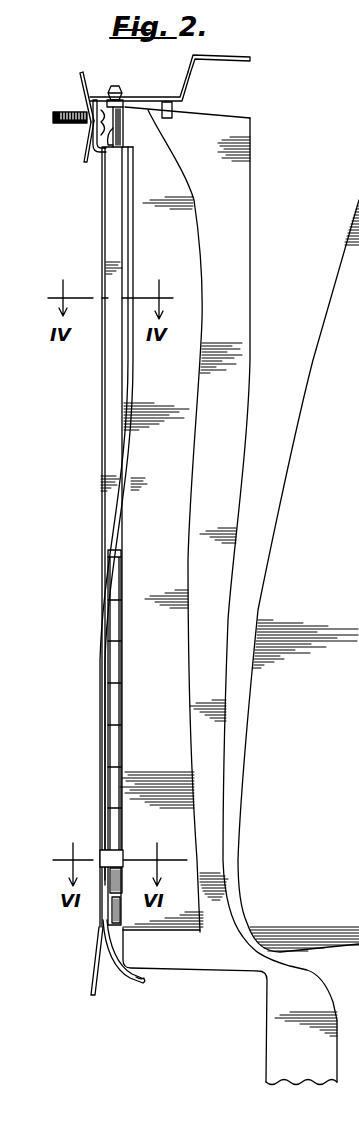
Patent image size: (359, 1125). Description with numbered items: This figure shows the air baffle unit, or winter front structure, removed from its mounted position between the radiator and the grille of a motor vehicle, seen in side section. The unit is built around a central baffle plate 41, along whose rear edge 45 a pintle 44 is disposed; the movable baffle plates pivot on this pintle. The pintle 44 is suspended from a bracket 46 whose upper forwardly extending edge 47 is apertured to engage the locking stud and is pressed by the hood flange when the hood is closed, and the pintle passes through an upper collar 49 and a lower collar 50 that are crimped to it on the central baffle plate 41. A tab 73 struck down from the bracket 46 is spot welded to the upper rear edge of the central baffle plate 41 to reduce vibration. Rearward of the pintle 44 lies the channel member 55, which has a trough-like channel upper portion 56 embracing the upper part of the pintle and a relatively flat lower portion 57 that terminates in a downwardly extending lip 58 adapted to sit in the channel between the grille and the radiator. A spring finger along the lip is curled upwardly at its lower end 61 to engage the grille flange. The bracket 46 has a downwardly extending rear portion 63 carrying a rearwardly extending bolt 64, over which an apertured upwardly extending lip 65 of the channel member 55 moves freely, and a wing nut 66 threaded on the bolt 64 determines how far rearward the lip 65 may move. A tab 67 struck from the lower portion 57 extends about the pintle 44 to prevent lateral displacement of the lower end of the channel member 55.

The central baffle plate 41 is at (238, 190).
The pintle 44 is at (113, 913).
The rear edge 45 is at (146, 981).
The bracket 46 is at (145, 97).
The upper forwardly extending edge 47 is at (235, 56).
The upper collar 49 is at (111, 137).
The lower collar 50 is at (113, 884).
The channel member 55 is at (97, 239).
The channel upper portion 56 is at (127, 200).
The lower portion 57 is at (100, 776).
The downwardly extending lip 58 is at (92, 988).
The curled lower end 61 is at (143, 986).
The downwardly extending rear portion 63 is at (96, 98).
The bolt 64 is at (60, 110).
The upwardly extending lip 65 is at (83, 77).
The wing nut 66 is at (85, 145).
The tab 67 is at (118, 855).
The tab 73 is at (173, 117).